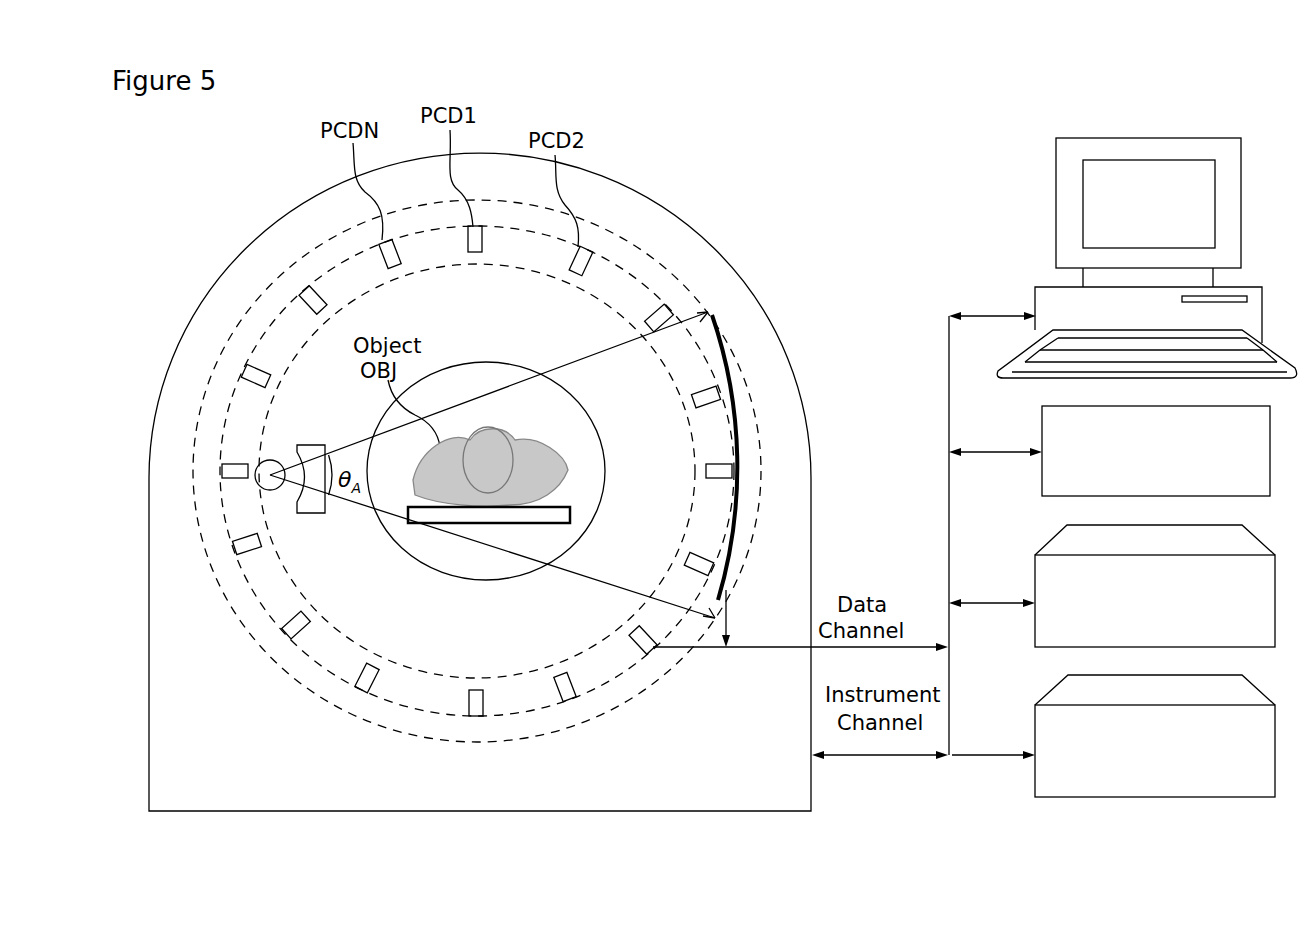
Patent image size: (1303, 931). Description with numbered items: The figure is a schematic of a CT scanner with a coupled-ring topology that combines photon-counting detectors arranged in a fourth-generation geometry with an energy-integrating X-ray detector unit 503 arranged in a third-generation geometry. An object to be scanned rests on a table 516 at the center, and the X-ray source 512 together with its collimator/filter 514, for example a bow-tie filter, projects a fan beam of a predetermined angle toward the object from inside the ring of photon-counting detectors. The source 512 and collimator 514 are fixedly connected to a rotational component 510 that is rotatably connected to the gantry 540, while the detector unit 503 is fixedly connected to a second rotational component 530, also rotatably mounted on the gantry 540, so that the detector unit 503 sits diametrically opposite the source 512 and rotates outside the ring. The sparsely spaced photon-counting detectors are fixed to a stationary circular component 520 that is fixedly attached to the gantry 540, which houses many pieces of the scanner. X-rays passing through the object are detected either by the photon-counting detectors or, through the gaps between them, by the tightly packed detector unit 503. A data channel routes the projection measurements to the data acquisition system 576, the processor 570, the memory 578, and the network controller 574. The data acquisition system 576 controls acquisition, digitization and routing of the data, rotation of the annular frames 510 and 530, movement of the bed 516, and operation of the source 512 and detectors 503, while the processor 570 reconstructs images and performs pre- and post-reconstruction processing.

The X-ray detector unit 503 is at (730, 357).
The rotational component 510 is at (343, 635).
The X-ray source 512 is at (260, 487).
The collimator/filter 514 is at (297, 447).
The table 516 is at (470, 523).
The circular component 520 is at (400, 707).
The rotational component 530 is at (537, 732).
The gantry 540 is at (700, 240).
The processor 570 is at (1146, 258).
The network controller 574 is at (1156, 451).
The data acquisition system 576 is at (1155, 736).
The memory 578 is at (1155, 586).